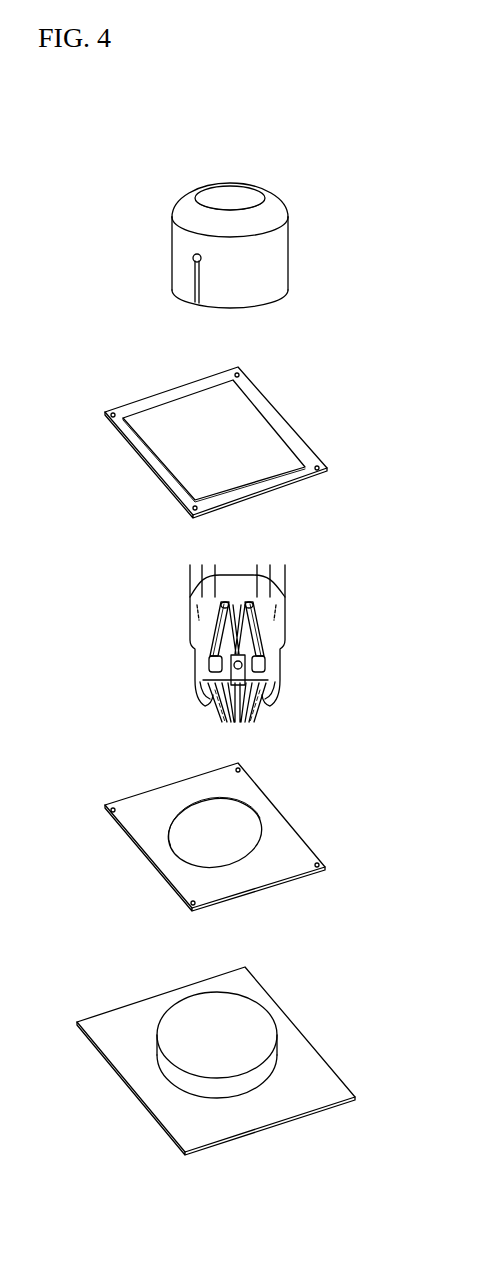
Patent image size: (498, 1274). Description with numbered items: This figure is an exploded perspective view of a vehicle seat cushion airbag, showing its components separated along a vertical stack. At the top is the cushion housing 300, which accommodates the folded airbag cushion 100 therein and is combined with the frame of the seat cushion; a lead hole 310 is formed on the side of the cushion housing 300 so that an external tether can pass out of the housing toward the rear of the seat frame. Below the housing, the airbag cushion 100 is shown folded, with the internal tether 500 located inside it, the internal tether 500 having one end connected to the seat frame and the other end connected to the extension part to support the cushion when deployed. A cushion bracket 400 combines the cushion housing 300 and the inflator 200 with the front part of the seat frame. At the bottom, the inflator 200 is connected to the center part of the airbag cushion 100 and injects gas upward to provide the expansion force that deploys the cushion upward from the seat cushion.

The airbag cushion 100 is at (219, 643).
The inflator 200 is at (310, 1060).
The cushion housing 300 is at (247, 178).
The lead hole 310 is at (193, 258).
The cushion bracket 400 is at (290, 437).
The internal tether 500 is at (263, 650).